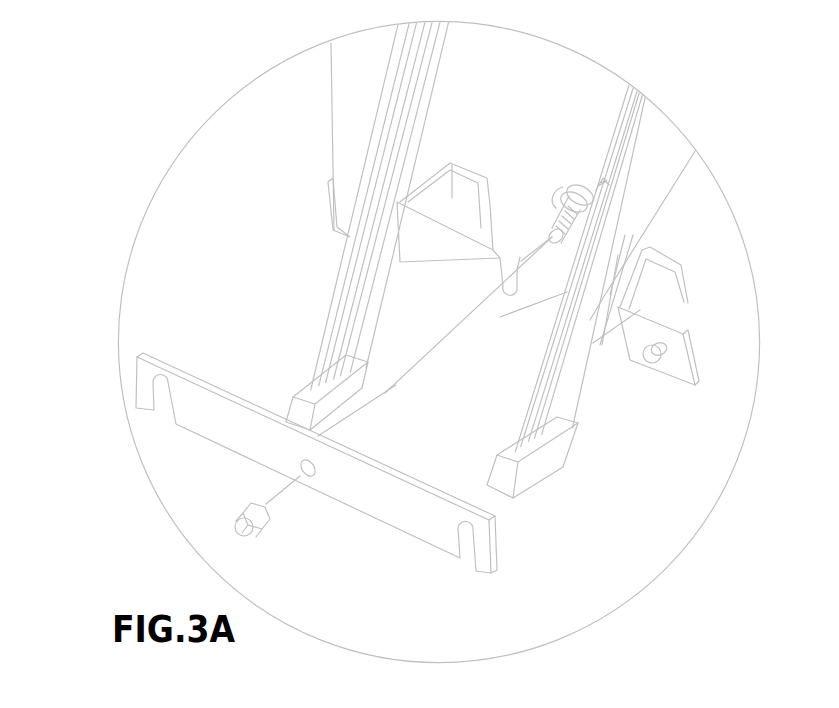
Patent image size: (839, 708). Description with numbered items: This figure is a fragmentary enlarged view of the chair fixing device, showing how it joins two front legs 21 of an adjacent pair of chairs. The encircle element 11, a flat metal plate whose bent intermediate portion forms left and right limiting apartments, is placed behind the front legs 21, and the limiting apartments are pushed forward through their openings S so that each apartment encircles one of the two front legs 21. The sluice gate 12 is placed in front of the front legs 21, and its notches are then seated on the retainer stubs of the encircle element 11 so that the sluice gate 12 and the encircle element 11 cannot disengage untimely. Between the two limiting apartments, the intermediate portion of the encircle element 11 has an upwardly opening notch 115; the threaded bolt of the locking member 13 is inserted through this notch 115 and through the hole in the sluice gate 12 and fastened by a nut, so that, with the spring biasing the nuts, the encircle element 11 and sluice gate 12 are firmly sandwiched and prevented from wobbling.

The encircle element 11 is at (708, 262).
The sluice gate 12 is at (199, 411).
The locking member 13 is at (583, 186).
The front legs 21 is at (347, 302).
The notch 115 is at (507, 262).
The opening S is at (435, 193).